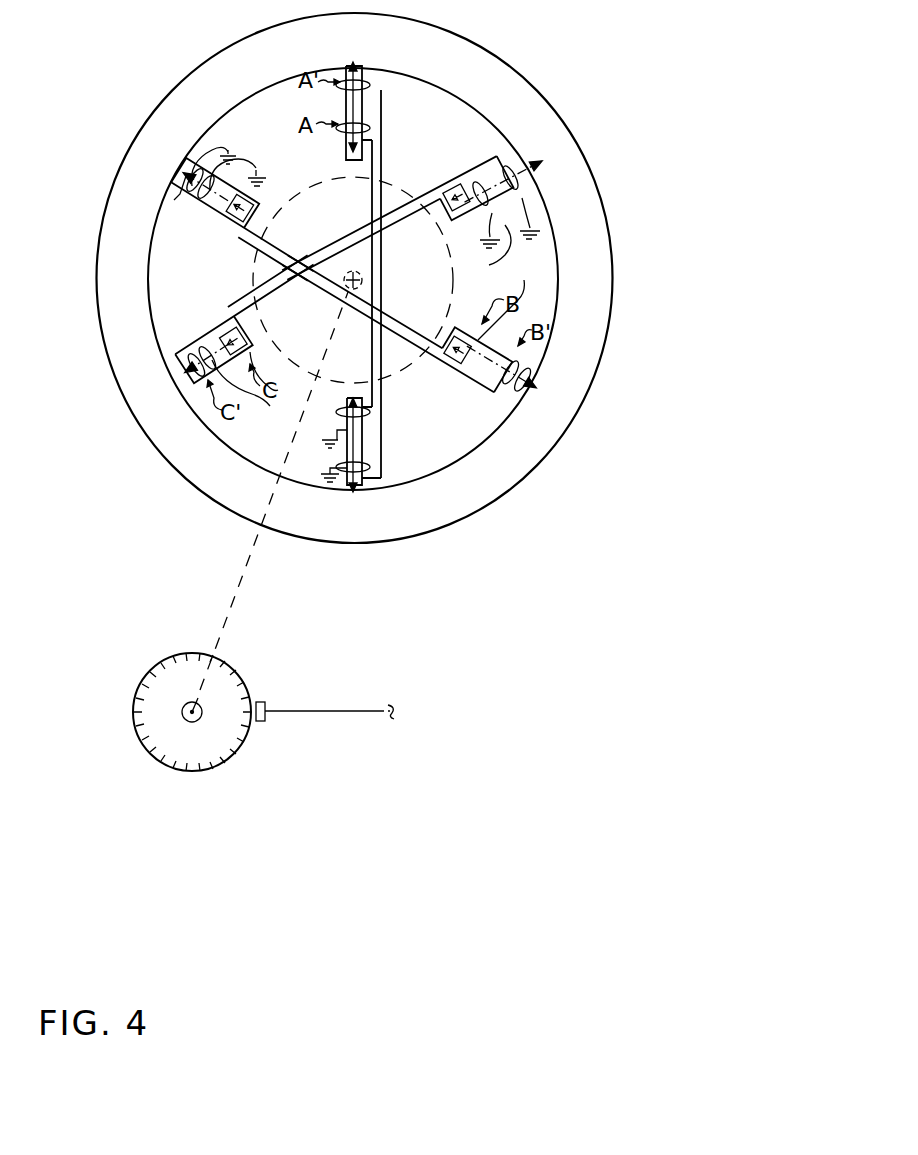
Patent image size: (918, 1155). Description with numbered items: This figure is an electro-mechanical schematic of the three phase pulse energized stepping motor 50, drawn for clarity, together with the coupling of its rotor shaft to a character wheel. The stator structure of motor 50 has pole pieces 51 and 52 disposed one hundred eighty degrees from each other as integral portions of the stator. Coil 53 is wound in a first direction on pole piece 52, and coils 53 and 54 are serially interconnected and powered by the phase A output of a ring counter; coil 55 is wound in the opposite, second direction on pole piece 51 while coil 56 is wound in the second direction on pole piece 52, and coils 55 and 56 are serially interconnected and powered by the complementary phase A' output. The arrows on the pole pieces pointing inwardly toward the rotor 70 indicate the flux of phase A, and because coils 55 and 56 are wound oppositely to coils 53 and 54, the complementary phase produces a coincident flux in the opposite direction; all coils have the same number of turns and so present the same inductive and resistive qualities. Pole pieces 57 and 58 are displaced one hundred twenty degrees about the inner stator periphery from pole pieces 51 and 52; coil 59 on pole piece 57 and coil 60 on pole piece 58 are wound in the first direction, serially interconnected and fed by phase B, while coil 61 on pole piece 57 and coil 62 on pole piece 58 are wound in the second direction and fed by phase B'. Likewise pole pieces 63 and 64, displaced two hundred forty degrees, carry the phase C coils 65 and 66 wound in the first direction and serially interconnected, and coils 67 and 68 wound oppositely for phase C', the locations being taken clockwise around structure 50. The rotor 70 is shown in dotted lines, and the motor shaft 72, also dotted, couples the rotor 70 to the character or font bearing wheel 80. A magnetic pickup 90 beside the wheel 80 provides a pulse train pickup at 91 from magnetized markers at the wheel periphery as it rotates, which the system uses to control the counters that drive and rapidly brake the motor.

The three phase pulse energized motor 50 is at (494, 46).
The pole piece 51 is at (338, 108).
The pole piece 52 is at (346, 451).
The coil 53 is at (365, 127).
The coil 54 is at (366, 414).
The coil 55 is at (366, 82).
The coil 56 is at (366, 465).
The pole piece 57 is at (470, 392).
The pole piece 58 is at (234, 184).
The coil 59 is at (499, 309).
The coil 60 is at (233, 240).
The coil 61 is at (530, 330).
The coil 62 is at (177, 210).
The pole piece 63 is at (218, 322).
The pole piece 64 is at (508, 266).
The south-west arm coil lead 65 is at (272, 396).
The coil 66 is at (462, 222).
The coil 67 is at (260, 420).
The coil 68 is at (496, 158).
The rotor 70 is at (455, 286).
The motor shaft 72 is at (245, 583).
The character or font bearing wheel 80 is at (220, 766).
The magnetic pickup 90 is at (262, 700).
The pulse train pickup 91 is at (322, 722).